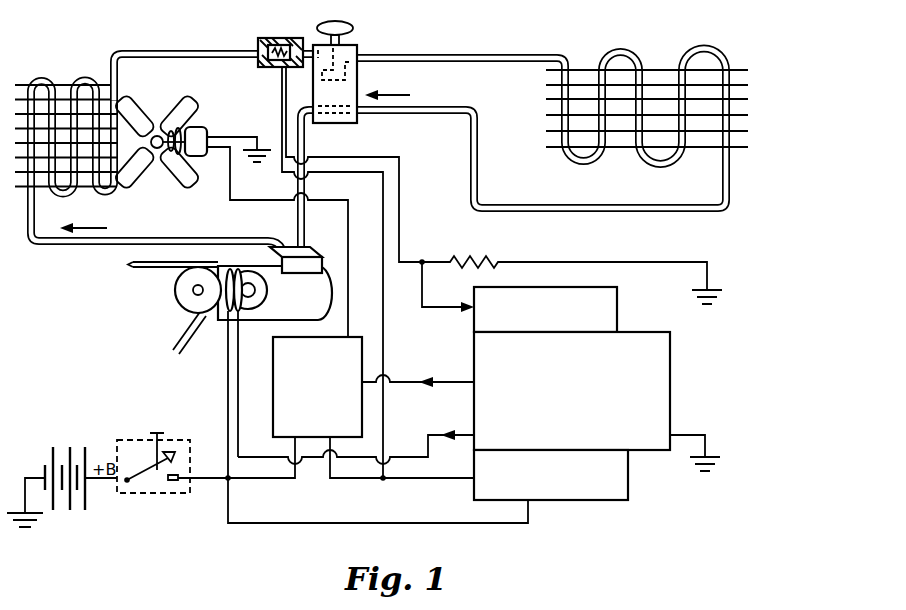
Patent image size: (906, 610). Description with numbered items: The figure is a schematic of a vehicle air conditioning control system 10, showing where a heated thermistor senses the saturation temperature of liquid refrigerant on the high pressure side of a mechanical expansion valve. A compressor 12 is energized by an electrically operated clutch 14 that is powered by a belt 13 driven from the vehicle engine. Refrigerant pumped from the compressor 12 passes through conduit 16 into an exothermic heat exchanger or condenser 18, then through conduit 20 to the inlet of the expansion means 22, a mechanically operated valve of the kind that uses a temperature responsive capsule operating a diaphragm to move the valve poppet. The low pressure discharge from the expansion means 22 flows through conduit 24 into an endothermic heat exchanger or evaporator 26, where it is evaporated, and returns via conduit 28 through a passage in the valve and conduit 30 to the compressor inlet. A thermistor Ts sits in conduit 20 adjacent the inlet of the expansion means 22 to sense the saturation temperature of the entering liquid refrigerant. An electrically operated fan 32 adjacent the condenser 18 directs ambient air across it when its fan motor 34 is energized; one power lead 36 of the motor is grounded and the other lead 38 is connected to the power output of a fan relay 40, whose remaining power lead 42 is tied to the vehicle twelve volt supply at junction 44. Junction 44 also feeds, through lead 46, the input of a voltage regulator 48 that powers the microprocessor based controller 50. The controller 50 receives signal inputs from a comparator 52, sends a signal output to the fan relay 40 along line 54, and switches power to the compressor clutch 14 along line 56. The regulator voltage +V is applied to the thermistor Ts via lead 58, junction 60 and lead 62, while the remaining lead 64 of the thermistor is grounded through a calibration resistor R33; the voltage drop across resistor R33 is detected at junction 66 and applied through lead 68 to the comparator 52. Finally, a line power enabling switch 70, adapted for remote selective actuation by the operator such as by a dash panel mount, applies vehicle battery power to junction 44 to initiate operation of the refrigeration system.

The control system 10 is at (138, 305).
The compressor 12 is at (304, 302).
The belt 13 is at (174, 345).
The electrically operated clutch 14 is at (235, 312).
The conduit 16 is at (133, 238).
The condenser 18 is at (40, 78).
The conduit 20 is at (150, 52).
The expansion means 22 is at (365, 48).
The conduit 24 is at (469, 57).
The evaporator 26 is at (640, 52).
The conduit 28 is at (497, 203).
The conduit 30 is at (297, 233).
The fan 32 is at (173, 101).
The fan motor 34 is at (196, 126).
The power lead 36 is at (232, 137).
The power lead 38 is at (230, 195).
The fan relay 40 is at (273, 398).
The power lead 42 is at (250, 480).
The junction 44 is at (226, 477).
The lead 46 is at (256, 525).
The voltage regulator 48 is at (590, 500).
The microprocessor based controller 50 is at (670, 391).
The comparator 52 is at (618, 311).
The line 54 is at (434, 381).
The line 56 is at (425, 450).
The lead 58 is at (447, 481).
The junction 60 is at (383, 482).
The lead 62 is at (383, 258).
The lead 64 is at (405, 177).
The junction 66 is at (422, 260).
The lead 68 is at (420, 291).
The line power enabling switch 70 is at (147, 465).
The thermistor Ts is at (283, 38).
The calibration resistor R33 is at (572, 269).